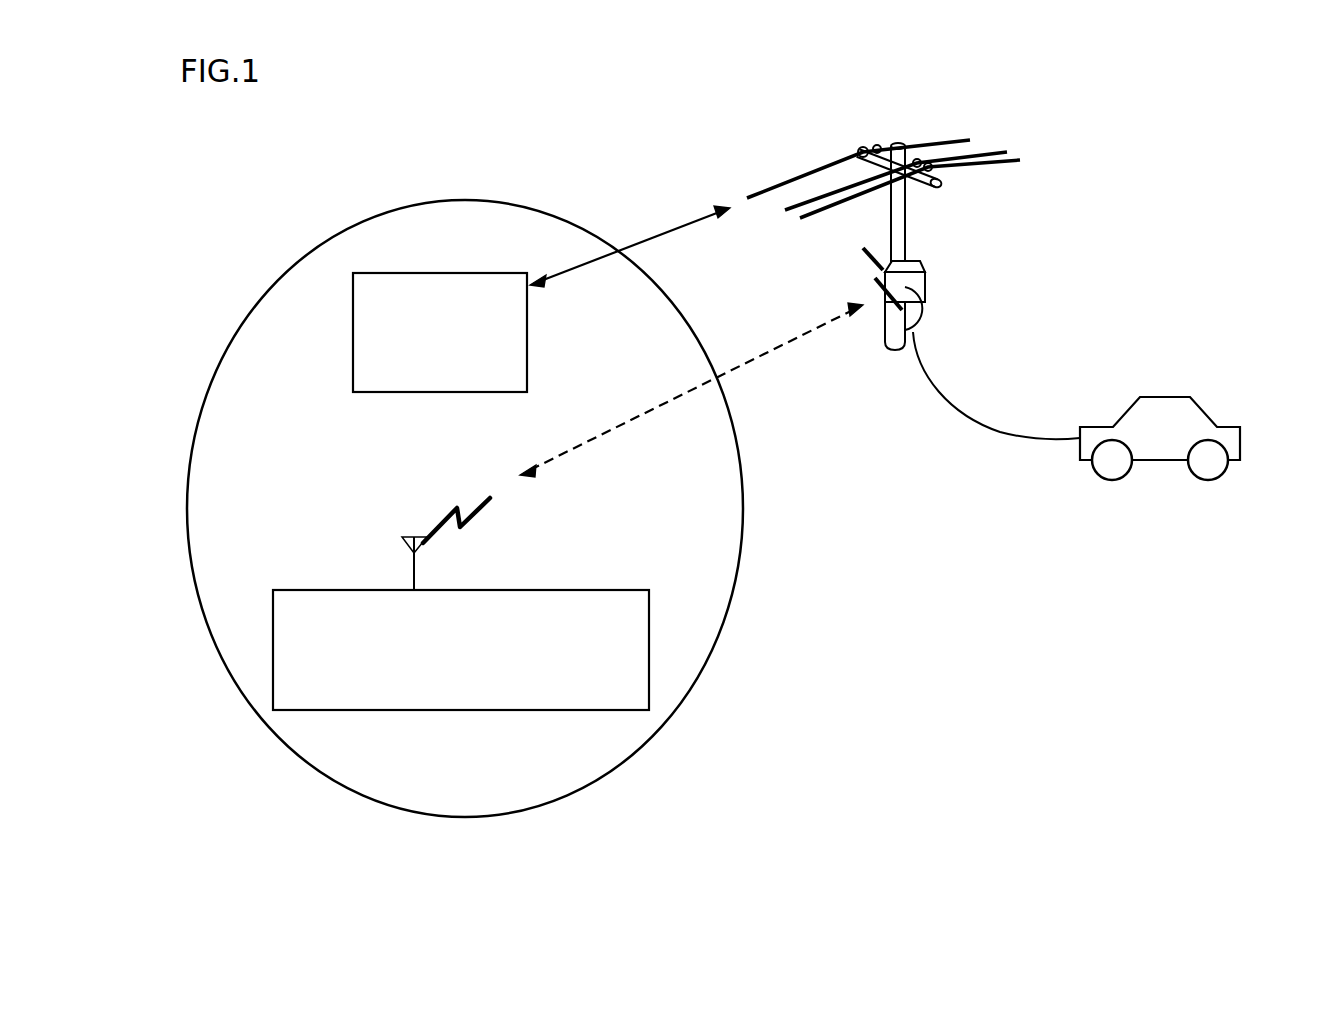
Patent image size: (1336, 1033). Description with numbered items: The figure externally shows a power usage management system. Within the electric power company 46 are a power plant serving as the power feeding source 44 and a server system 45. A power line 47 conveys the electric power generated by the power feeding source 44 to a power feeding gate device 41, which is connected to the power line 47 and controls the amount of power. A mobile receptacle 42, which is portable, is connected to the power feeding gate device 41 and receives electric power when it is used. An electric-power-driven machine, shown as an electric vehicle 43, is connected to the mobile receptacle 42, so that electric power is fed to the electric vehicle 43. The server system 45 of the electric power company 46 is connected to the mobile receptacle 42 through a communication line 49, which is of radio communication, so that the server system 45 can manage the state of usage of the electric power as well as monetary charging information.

The power feeding gate device 41 is at (925, 265).
The mobile receptacle 42 is at (918, 310).
The electric vehicle 43 is at (1173, 405).
The power plant (power feeding source) 44 is at (527, 350).
The server system 45 is at (567, 590).
The electric power company 46 is at (742, 577).
The power line 47 is at (678, 228).
The communication line 49 is at (647, 417).